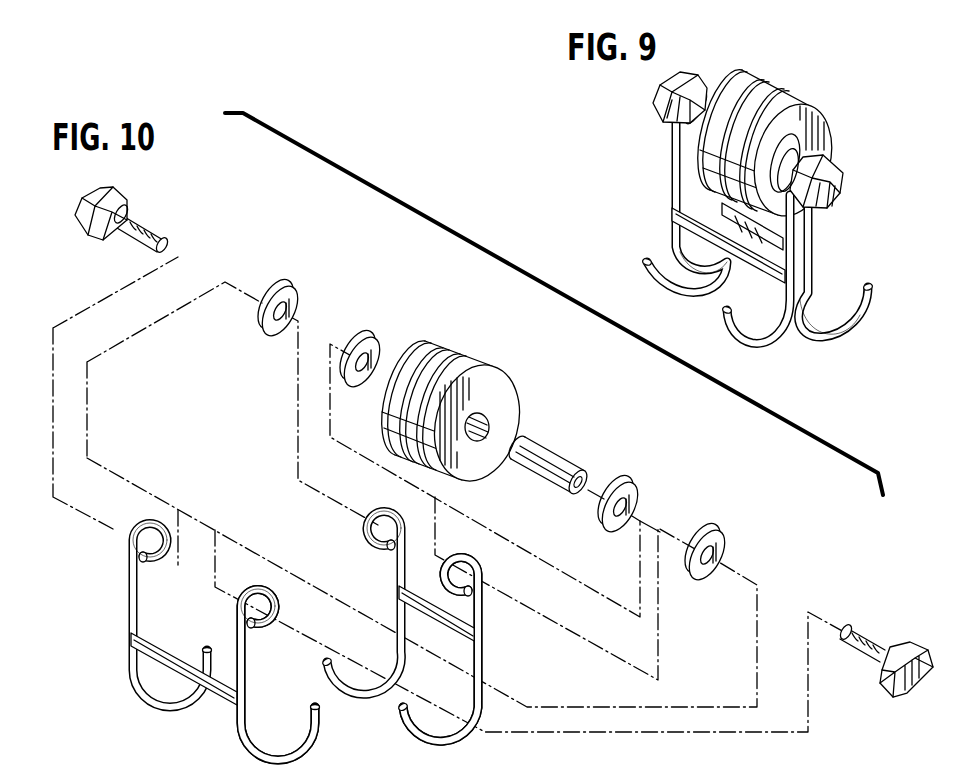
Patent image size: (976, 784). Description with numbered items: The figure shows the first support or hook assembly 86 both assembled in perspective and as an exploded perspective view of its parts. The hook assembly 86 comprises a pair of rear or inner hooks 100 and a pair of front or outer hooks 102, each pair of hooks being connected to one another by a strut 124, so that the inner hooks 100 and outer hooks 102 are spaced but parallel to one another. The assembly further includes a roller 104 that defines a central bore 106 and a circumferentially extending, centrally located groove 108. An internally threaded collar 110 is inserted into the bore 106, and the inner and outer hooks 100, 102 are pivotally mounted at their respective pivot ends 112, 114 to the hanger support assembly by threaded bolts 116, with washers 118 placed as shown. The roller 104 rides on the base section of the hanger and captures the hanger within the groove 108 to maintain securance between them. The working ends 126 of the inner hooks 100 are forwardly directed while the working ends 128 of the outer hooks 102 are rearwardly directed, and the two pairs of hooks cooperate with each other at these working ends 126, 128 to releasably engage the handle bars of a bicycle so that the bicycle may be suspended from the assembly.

In FIG. 9, the first support or hook assembly 86 is at (728, 223).
In FIG. 10, the rear or inner hooks 100 is at (473, 713).
In FIG. 9, the rear or inner hooks 100 is at (657, 287).
In FIG. 10, the front or outer hooks 102 is at (130, 600).
In FIG. 9, the front or outer hooks 102 is at (673, 193).
In FIG. 10, the roller 104 is at (499, 386).
In FIG. 9, the roller 104 is at (802, 141).
In FIG. 10, the central bore 106 is at (487, 417).
In FIG. 10, the groove 108 is at (460, 348).
In FIG. 9, the groove 108 is at (783, 80).
In FIG. 10, the internally threaded collar 110 is at (553, 457).
In FIG. 10, the pivot ends 112 is at (403, 543).
In FIG. 10, the pivot ends 114 is at (137, 523).
In FIG. 10, the threaded bolts 116 is at (108, 190).
In FIG. 9, the threaded bolts 116 is at (663, 92).
In FIG. 10, the washers 118 is at (360, 336).
In FIG. 10, the strut 124 is at (167, 660).
In FIG. 10, the working ends 126 is at (330, 683).
In FIG. 10, the working ends 128 is at (140, 623).